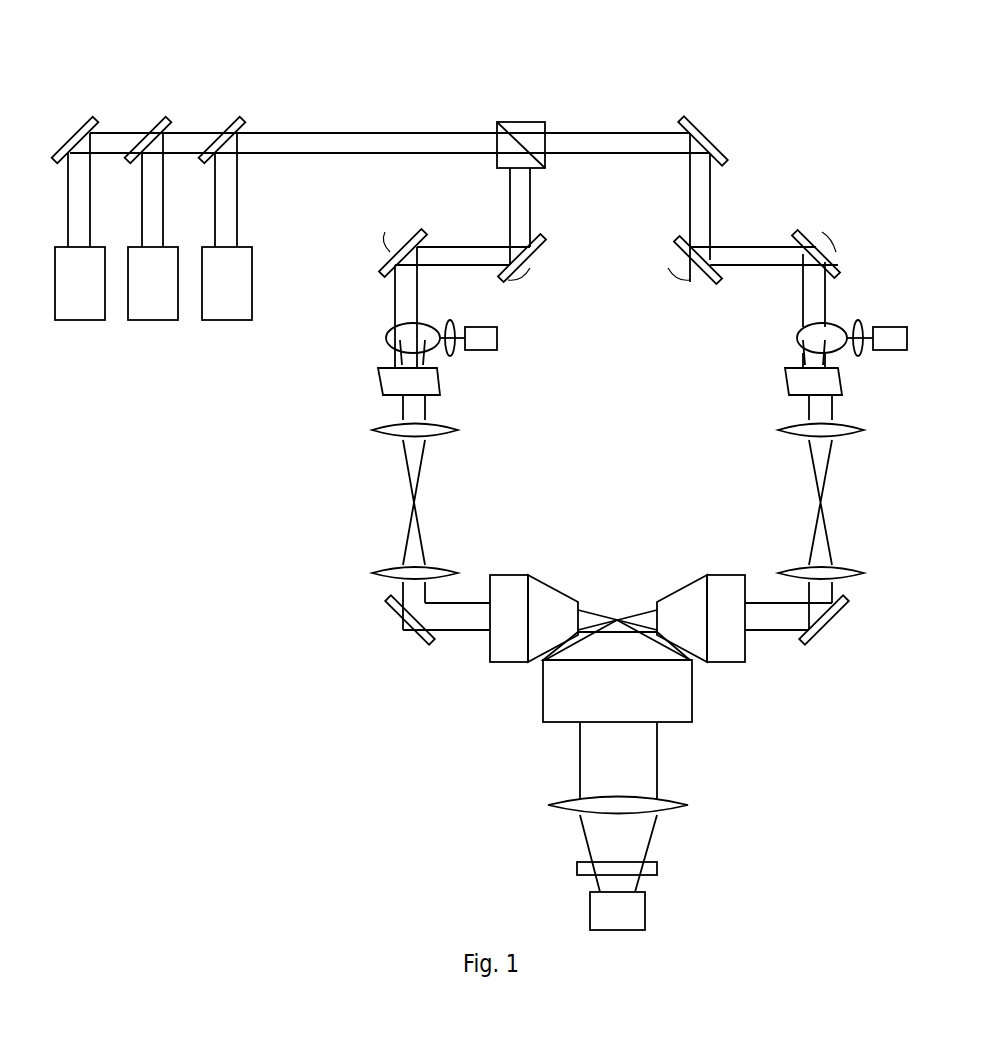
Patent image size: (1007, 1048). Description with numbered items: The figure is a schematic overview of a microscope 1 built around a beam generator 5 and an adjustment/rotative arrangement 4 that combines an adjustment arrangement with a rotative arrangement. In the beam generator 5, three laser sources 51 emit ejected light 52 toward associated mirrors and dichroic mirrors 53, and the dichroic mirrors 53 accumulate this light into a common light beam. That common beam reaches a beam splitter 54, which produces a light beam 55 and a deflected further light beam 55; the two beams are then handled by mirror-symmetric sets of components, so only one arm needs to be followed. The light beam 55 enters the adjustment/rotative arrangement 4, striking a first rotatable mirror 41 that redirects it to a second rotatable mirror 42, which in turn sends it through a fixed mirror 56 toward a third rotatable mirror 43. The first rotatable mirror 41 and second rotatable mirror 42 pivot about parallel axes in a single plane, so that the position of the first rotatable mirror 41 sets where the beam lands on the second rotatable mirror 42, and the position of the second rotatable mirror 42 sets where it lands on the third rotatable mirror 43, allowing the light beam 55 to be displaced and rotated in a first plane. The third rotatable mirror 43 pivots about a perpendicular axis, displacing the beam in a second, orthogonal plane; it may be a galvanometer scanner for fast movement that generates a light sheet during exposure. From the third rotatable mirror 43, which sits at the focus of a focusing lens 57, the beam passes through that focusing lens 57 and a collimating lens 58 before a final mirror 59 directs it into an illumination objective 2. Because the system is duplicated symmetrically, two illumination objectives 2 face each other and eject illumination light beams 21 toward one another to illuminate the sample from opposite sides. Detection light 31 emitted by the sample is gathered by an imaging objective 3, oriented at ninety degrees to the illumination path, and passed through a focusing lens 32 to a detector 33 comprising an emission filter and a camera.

The microscope 1 is at (381, 106).
The illumination objective 2 is at (507, 643).
The imaging objective 3 is at (677, 699).
The adjustment/rotative arrangement 4 is at (348, 318).
The beam generator 5 is at (75, 114).
The illumination light beam 21 is at (645, 617).
The detection light 31 is at (642, 755).
The focusing lens 32 is at (665, 806).
The detector 33 is at (565, 888).
The first rotatable mirror 41 is at (705, 250).
The second rotatable mirror 42 is at (805, 232).
The third rotatable mirror 43 is at (833, 325).
The laser source 51 is at (155, 307).
The ejected light 52 is at (222, 200).
The dichroic mirror 53 is at (143, 120).
The beam splitter 54 is at (522, 126).
The light beam 55 is at (630, 140).
The fixed mirror 56 is at (387, 385).
The focusing lens 57 is at (372, 428).
The collimating lens 58 is at (375, 575).
The final mirror 59 is at (410, 622).